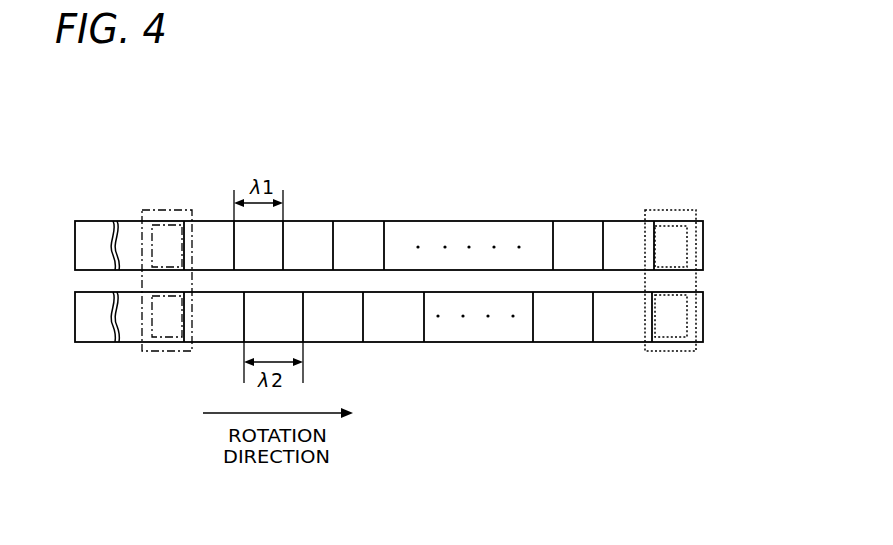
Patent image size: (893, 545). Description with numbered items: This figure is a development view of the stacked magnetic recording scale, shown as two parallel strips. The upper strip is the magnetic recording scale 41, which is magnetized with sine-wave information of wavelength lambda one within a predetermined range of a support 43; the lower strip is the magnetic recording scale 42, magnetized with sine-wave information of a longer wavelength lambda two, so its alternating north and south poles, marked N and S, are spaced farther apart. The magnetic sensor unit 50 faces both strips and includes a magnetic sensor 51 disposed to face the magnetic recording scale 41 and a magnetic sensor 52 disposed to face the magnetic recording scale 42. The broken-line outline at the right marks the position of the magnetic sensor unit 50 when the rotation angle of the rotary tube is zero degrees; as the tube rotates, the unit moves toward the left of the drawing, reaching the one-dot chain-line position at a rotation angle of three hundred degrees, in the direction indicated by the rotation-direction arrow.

The magnetic recording scale 41 is at (427, 214).
The magnetic recording scale 42 is at (441, 352).
The support 43 is at (92, 227).
The magnetic sensor unit 50 is at (689, 210).
The magnetic sensor 51 is at (686, 258).
The magnetic sensor 52 is at (686, 322).